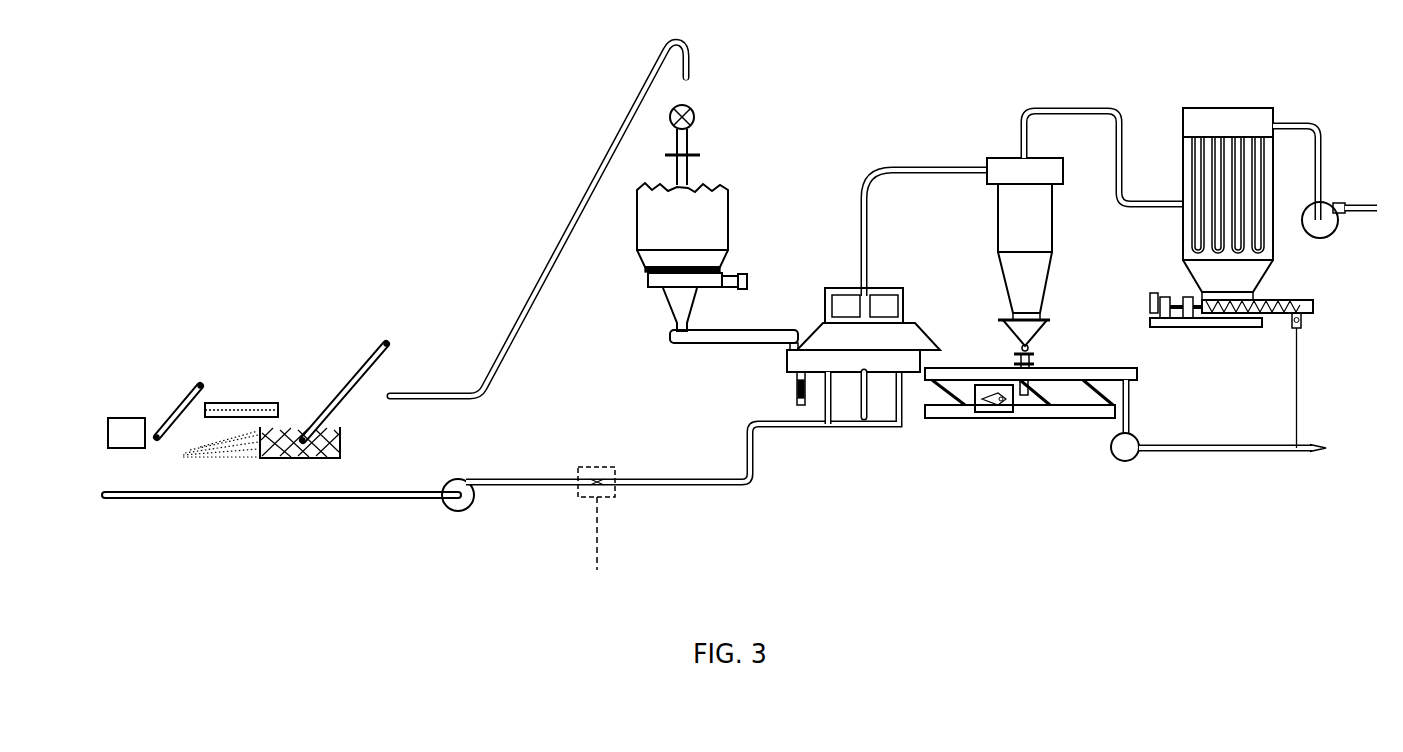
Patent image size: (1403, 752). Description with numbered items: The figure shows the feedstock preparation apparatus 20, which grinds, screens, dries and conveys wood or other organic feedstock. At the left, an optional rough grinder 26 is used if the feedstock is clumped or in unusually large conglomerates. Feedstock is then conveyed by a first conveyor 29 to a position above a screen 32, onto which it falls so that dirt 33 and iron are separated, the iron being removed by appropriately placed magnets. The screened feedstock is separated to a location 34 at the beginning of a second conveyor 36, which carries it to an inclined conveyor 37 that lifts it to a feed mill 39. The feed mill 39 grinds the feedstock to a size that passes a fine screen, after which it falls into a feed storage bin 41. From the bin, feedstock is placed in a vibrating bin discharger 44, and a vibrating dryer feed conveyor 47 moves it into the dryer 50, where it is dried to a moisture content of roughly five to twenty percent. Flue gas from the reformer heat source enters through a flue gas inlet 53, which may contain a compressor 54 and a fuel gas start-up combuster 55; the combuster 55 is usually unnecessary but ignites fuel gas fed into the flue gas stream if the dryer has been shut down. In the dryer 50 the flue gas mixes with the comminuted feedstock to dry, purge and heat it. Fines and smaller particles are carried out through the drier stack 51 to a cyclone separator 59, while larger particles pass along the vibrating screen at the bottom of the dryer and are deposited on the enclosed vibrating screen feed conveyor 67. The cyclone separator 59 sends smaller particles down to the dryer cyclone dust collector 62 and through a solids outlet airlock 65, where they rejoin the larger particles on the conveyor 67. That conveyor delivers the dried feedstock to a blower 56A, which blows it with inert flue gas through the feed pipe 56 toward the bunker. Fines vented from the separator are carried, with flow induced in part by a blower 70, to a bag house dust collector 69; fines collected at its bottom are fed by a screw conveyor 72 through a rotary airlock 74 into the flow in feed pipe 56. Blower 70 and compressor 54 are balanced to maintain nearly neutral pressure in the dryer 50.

The feedstock preparation apparatus 20 is at (428, 97).
The rough grinder 26 is at (121, 418).
The first conveyor 29 is at (190, 385).
The screen 32 is at (245, 403).
The dirt 33 is at (187, 451).
The location 34 is at (341, 443).
The second conveyor 36 is at (351, 381).
The conveyor 37 is at (567, 222).
The feed mill 39 is at (694, 119).
The feed storage bin 41 is at (641, 212).
The vibrating bin discharger 44 is at (674, 302).
The vibrating dryer feed conveyor 47 is at (688, 345).
The dryer 50 is at (925, 332).
The drier stack 51 is at (861, 235).
The flue gas inlet 53 is at (330, 499).
The compressor 54 is at (469, 507).
The fuel gas start-up combuster 55 is at (602, 466).
The feed pipe 56 is at (1218, 444).
The blower 56A is at (1131, 460).
The cyclone separator 59 is at (998, 200).
The dryer cyclone dust collector 62 is at (1040, 330).
The solids outlet airlock 65 is at (1029, 349).
The vibrating screen feed conveyor 67 is at (951, 368).
The bag house dust collector 69 is at (1183, 160).
The blower 70 is at (1338, 203).
The screw conveyor 72 is at (1270, 315).
The rotary airlock 74 is at (1302, 322).